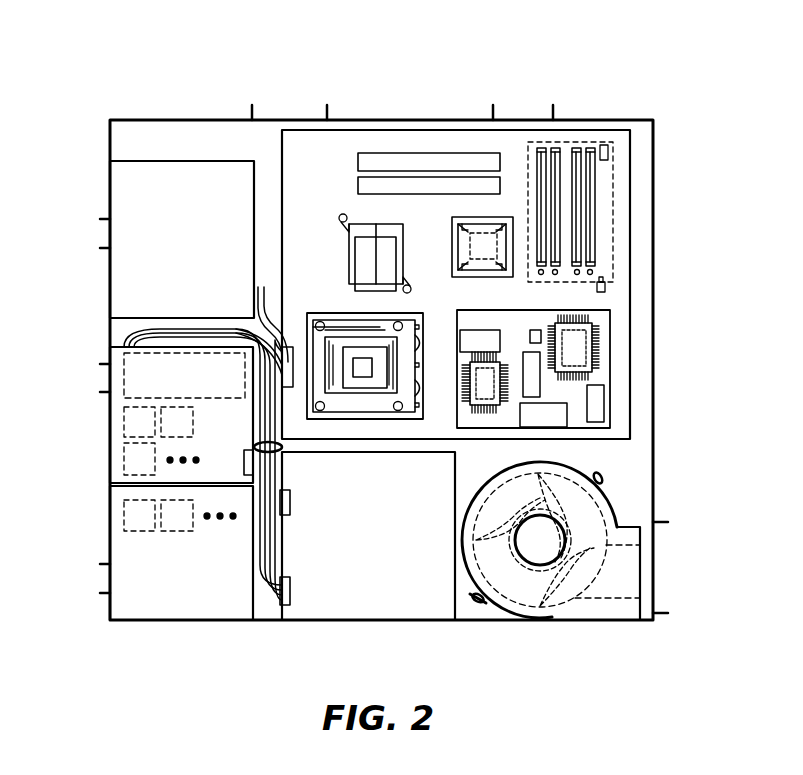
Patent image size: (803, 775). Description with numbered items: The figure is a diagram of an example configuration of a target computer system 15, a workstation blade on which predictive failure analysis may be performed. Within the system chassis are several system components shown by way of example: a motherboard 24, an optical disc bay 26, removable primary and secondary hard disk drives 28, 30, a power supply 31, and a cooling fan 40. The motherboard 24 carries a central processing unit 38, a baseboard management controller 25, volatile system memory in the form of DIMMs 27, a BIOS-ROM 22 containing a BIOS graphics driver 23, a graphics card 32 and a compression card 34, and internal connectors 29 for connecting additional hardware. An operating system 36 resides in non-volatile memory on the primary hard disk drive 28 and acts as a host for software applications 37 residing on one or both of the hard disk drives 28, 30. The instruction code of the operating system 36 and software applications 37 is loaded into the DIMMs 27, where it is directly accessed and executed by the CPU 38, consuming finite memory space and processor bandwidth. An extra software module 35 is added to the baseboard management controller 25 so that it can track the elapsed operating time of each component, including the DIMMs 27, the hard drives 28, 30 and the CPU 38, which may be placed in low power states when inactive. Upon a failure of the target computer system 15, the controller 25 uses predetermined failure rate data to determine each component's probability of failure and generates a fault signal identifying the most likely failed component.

The target computer system 15 is at (418, 95).
The BIOS-ROM 22 is at (480, 215).
The BIOS graphics driver 23 is at (482, 260).
The motherboard 24 is at (448, 130).
The baseboard management controller 25 is at (610, 343).
The optical disc bay 26 is at (128, 180).
The DIMMs 27 is at (613, 180).
The primary hard disk drive 28 is at (110, 455).
The internal connectors 29 is at (340, 219).
The secondary hard disk drive 30 is at (128, 487).
The power supply 31 is at (358, 597).
The graphics card 32 is at (470, 153).
The compression card 34 is at (487, 183).
The extra software module 35 is at (593, 335).
The operating system 36 is at (125, 372).
The software applications 37 is at (172, 430).
The central processing unit 38 is at (335, 310).
The cooling fan 40 is at (597, 503).